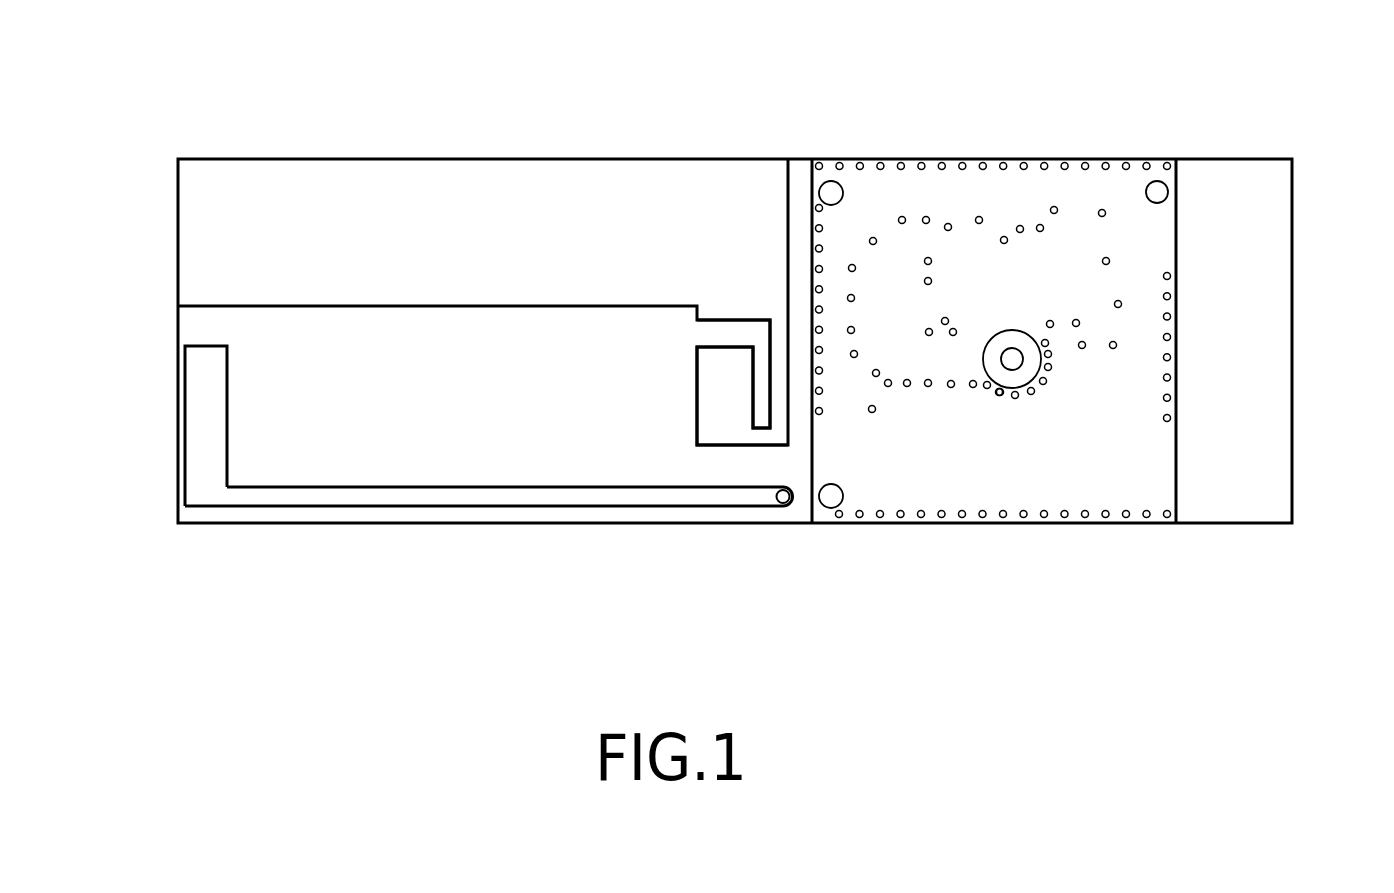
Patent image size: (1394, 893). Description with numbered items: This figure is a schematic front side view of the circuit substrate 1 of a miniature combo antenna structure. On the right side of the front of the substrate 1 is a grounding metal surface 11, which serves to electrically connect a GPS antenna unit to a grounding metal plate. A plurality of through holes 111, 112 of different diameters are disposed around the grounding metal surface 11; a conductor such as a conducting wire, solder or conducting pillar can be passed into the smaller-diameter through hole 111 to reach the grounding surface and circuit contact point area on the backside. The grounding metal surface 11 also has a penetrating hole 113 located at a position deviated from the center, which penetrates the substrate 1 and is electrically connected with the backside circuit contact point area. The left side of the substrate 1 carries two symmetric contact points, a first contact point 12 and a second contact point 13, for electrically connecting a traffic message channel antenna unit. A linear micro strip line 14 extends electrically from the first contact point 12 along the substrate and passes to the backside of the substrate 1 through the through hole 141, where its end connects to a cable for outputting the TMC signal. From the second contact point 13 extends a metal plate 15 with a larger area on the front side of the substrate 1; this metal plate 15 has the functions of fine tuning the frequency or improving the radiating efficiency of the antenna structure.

The circuit substrate 1 is at (1250, 332).
The grounding metal surface 11 is at (1103, 276).
The through hole 111 is at (1043, 160).
The through hole 112 is at (1157, 192).
The penetrating hole 113 is at (1012, 358).
The first contact point 12 is at (210, 414).
The second contact point 13 is at (715, 427).
The micro strip line 14 is at (478, 497).
The through hole 141 is at (783, 503).
The metal plate 15 is at (458, 223).